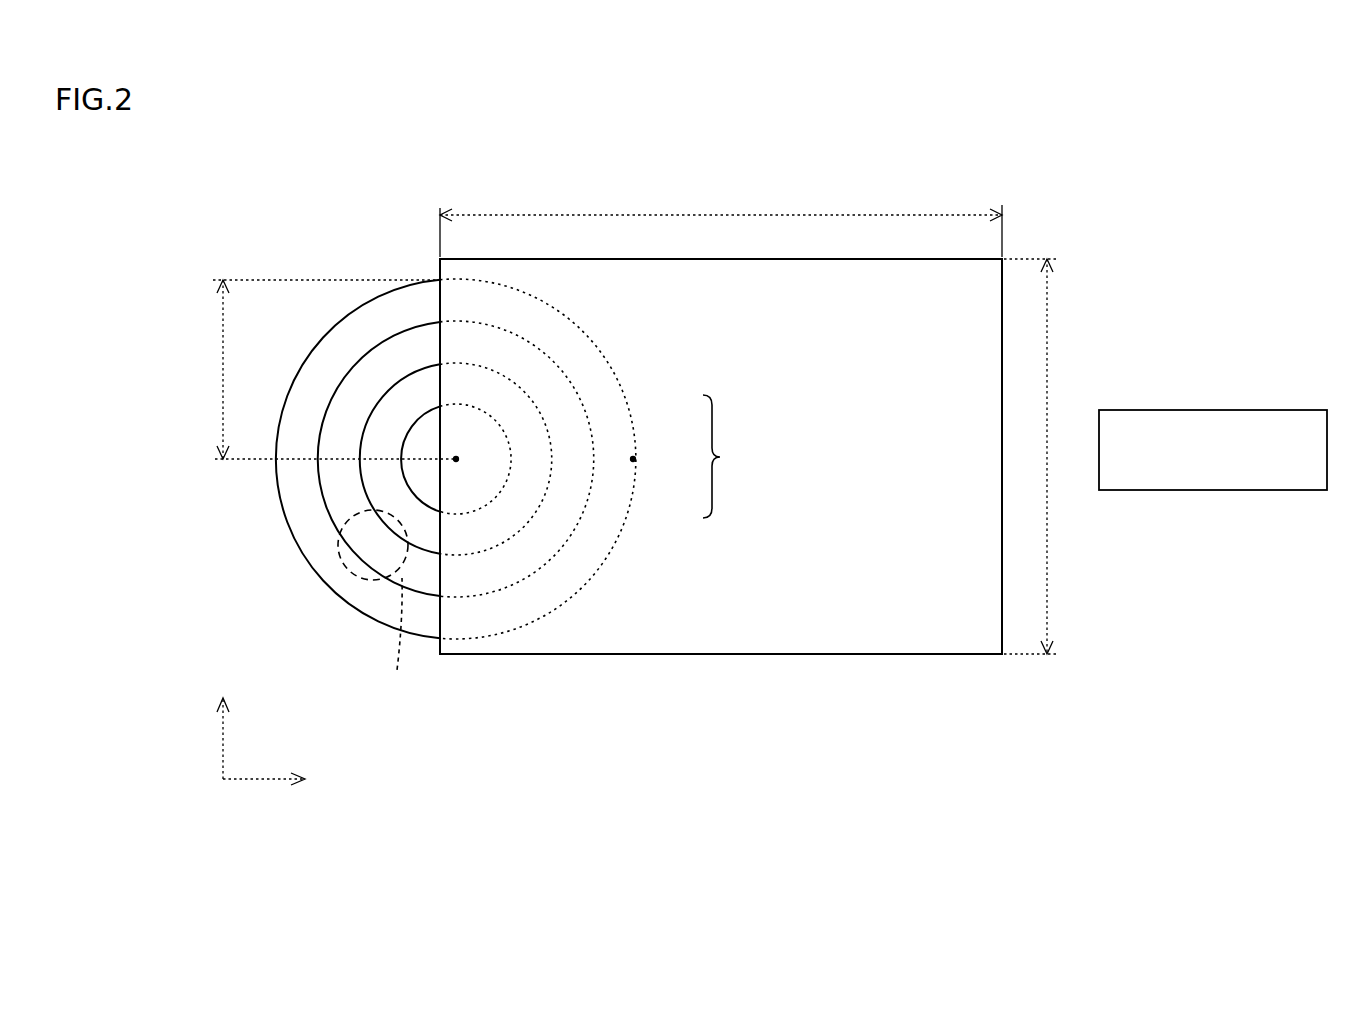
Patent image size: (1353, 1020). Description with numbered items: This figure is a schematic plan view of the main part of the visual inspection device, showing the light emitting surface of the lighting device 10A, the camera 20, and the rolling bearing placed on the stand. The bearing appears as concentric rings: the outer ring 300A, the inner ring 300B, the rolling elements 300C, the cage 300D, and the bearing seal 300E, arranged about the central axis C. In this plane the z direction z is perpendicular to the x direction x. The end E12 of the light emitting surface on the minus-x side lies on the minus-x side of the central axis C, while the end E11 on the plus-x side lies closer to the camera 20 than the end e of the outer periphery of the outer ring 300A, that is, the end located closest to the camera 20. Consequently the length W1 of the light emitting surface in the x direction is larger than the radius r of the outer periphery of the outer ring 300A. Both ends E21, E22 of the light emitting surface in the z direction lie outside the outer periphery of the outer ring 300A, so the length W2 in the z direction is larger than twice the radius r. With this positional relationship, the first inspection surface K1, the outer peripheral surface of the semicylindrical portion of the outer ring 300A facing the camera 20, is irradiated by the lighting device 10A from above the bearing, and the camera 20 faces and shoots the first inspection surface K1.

The lighting device 10A is at (963, 313).
The camera 20 is at (1200, 410).
The end on the +x direction side of the light emitting surface E11 is at (1005, 365).
The end on the −x direction side of the light emitting surface E12 is at (440, 345).
The end in the z direction of the light emitting surface E21 is at (908, 257).
The end in the z direction of the light emitting surface E22 is at (912, 655).
The outer ring 300A is at (335, 572).
The inner ring 300B is at (380, 483).
The rolling elements 300C is at (408, 641).
The cage 300D is at (340, 545).
The bearing seal 300E is at (335, 475).
The central axis C is at (455, 445).
The end of the outer periphery of the outer ring e is at (635, 459).
The first inspection surface K1 is at (728, 456).
The length in the x direction of the light emitting surface W1 is at (721, 221).
The length in the z direction of the light emitting surface W2 is at (1046, 456).
The radius of the outer periphery of the outer ring r is at (331, 369).
The x direction x is at (273, 781).
The z direction z is at (222, 727).